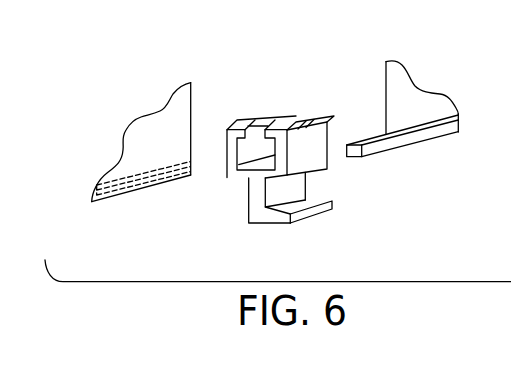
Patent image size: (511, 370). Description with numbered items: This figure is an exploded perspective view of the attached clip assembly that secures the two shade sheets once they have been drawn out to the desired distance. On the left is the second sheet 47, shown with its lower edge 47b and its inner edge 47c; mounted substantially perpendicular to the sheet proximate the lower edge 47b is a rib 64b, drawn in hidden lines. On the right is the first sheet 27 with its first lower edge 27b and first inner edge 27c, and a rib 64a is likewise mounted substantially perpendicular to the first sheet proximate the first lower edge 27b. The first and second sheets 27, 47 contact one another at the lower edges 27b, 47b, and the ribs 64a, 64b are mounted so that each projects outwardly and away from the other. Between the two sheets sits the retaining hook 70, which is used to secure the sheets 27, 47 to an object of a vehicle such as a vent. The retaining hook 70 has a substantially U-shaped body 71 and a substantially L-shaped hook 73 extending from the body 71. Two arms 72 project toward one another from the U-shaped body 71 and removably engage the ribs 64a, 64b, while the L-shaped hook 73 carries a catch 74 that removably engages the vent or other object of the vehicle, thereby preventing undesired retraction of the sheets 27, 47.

The first sheet 27 is at (409, 110).
The first lower edge 27b is at (467, 130).
The first inner edge 27c is at (386, 70).
The second sheet 47 is at (133, 134).
The lower edge 47b is at (155, 188).
The inner edge 47c is at (191, 92).
The rib 64a is at (372, 158).
The rib 64b is at (92, 193).
The retaining hook 70 is at (286, 168).
The U-shaped body 71 is at (240, 177).
The arms 72 is at (260, 115).
The L-shaped hook 73 is at (257, 207).
The catch 74 is at (278, 222).